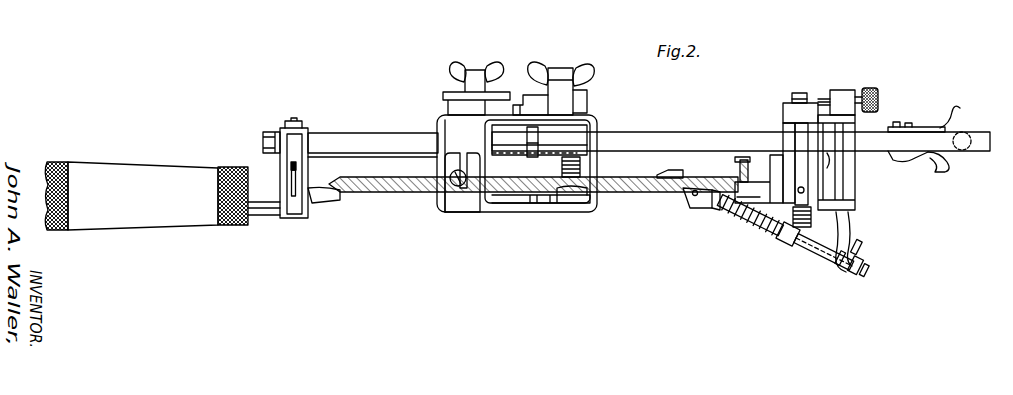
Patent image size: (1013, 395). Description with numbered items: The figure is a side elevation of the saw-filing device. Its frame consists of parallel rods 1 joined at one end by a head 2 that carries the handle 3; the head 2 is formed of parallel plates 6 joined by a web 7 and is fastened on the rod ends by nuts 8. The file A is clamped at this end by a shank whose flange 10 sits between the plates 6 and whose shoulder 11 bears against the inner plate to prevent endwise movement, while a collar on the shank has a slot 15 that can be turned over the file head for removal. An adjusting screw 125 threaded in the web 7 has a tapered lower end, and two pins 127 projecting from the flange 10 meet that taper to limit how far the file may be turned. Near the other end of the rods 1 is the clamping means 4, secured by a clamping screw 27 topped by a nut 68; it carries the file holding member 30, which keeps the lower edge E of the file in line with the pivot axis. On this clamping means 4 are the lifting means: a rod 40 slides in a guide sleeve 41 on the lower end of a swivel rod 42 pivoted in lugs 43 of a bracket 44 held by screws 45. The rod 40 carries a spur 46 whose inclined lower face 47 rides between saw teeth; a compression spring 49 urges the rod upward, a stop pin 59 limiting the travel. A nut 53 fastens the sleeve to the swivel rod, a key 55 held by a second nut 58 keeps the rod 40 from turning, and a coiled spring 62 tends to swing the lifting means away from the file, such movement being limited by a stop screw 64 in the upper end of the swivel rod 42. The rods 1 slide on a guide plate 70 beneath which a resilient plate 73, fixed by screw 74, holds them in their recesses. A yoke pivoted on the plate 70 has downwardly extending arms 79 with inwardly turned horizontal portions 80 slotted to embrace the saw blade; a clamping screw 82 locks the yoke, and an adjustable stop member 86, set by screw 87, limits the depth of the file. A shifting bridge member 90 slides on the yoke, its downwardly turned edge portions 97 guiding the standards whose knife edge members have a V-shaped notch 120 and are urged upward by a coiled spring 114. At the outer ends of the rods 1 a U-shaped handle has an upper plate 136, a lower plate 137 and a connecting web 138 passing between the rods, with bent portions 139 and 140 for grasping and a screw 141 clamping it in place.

The rods 1 is at (665, 140).
The head 2 is at (316, 127).
The handle 3 is at (148, 215).
The clamping means 4 is at (788, 158).
The plates 6 is at (310, 152).
The web 7 is at (283, 130).
The nuts 8 is at (265, 134).
The flange 10 is at (293, 198).
The shoulder 11 is at (313, 204).
The slot 15 is at (266, 207).
The clamping screw 27 is at (800, 92).
The file holding member 30 is at (742, 213).
The lifting rod 40 is at (778, 239).
The guide sleeve 41 is at (793, 243).
The swivel rod 42 is at (846, 200).
The lugs 43 is at (836, 108).
The bracket 44 is at (822, 184).
The screws 45 is at (843, 159).
The spur 46 is at (668, 171).
The inclined lower face 47 is at (690, 200).
The compression spring 49 is at (762, 234).
The nut 53 is at (840, 262).
The key 55 is at (862, 246).
The second nut 58 is at (860, 272).
The stop pin 59 is at (845, 268).
The coiled spring 62 is at (796, 216).
The stop screw 64 is at (874, 92).
The nut 68 is at (790, 101).
The guide plate 70 is at (593, 100).
The resilient plate 73 is at (560, 128).
The screw 74 is at (530, 158).
The arms 79 is at (438, 123).
The horizontal portions 80 is at (560, 206).
The clamping screw 82 is at (565, 82).
The stop member 86 is at (452, 172).
The screw 87 is at (460, 181).
The shifting bridge member 90 is at (500, 112).
The edge portions 97 is at (490, 107).
The coiled spring 114 is at (582, 160).
The V-shaped notch 120 is at (576, 206).
The adjusting screw 125 is at (297, 120).
The pins 127 is at (297, 174).
The upper plate 136 is at (918, 127).
The lower plate 137 is at (887, 158).
The web 138 is at (969, 132).
The upwardly bent portions 139 is at (955, 110).
The downwardly bent portions 140 is at (945, 170).
The screw 141 is at (897, 122).
The file A is at (415, 188).
The lower edge of the file E is at (618, 185).